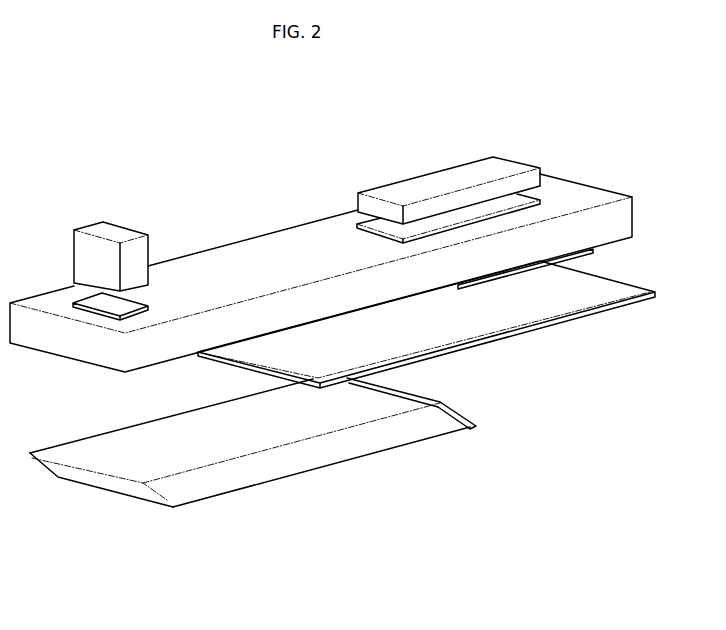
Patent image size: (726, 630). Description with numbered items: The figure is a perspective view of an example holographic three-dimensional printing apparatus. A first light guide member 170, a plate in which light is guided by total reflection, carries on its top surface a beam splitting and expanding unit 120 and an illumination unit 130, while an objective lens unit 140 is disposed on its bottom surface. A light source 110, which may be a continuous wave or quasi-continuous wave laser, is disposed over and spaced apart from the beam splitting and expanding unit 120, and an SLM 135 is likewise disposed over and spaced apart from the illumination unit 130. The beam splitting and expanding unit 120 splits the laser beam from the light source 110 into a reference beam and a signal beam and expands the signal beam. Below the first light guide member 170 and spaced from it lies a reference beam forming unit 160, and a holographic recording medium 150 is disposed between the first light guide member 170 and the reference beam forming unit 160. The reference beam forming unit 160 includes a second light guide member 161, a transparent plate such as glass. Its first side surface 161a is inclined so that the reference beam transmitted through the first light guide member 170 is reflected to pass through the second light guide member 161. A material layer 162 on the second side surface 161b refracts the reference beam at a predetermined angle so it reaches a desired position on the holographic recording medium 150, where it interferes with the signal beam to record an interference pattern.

The light source 110 is at (75, 239).
The beam splitting and expanding unit 120 is at (82, 298).
The illumination unit 130 is at (540, 200).
The SLM 135 is at (517, 167).
The objective lens unit 140 is at (596, 249).
The holographic recording medium 150 is at (588, 316).
The reference beam forming unit 160 is at (288, 449).
The second light guide member 161 is at (312, 464).
The first side surface 161a is at (108, 483).
The second side surface 161b is at (460, 428).
The material layer 162 is at (464, 421).
The first light guide member 170 is at (257, 245).